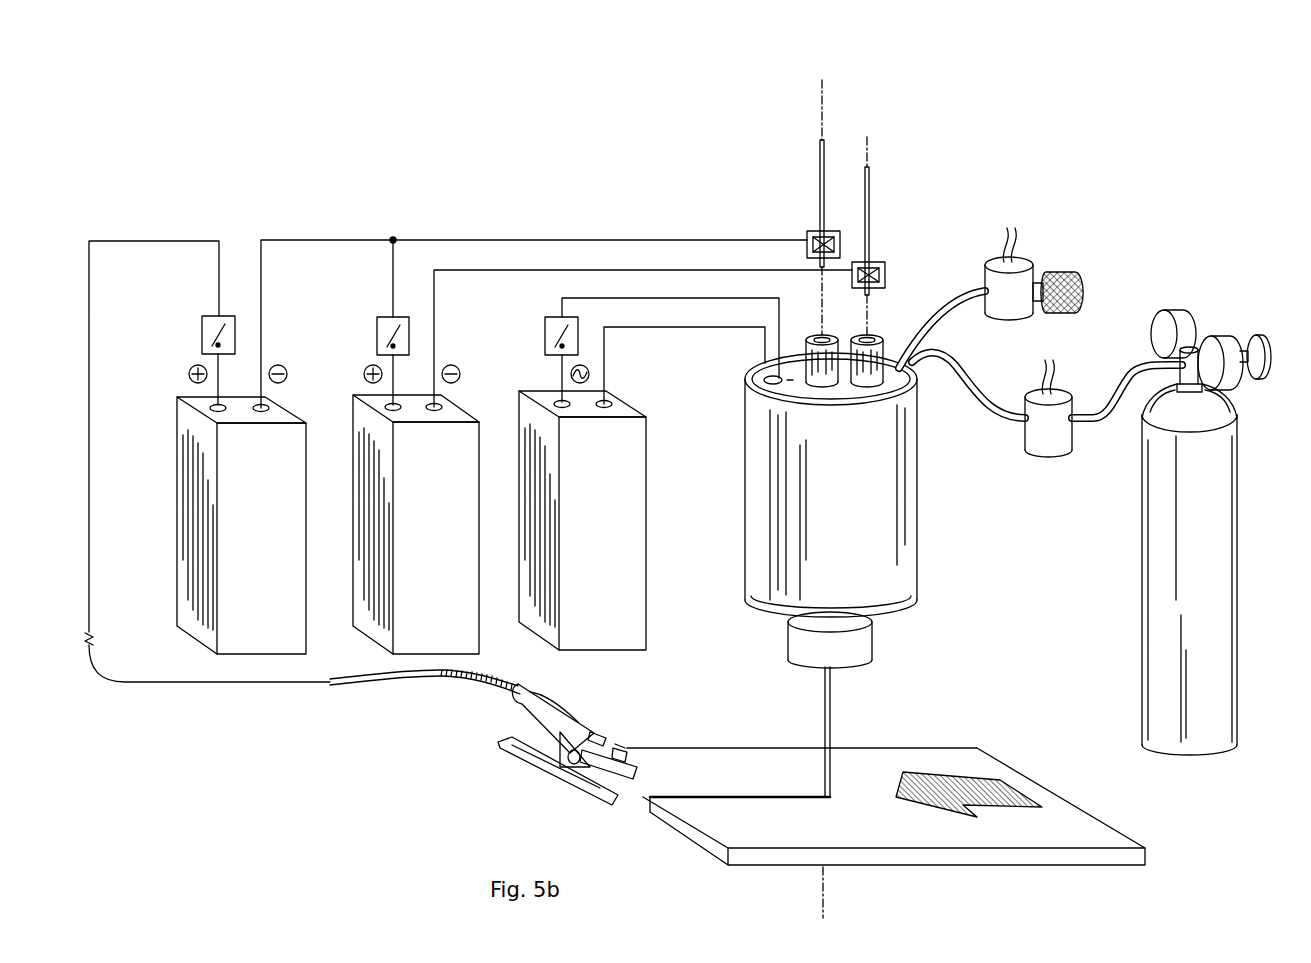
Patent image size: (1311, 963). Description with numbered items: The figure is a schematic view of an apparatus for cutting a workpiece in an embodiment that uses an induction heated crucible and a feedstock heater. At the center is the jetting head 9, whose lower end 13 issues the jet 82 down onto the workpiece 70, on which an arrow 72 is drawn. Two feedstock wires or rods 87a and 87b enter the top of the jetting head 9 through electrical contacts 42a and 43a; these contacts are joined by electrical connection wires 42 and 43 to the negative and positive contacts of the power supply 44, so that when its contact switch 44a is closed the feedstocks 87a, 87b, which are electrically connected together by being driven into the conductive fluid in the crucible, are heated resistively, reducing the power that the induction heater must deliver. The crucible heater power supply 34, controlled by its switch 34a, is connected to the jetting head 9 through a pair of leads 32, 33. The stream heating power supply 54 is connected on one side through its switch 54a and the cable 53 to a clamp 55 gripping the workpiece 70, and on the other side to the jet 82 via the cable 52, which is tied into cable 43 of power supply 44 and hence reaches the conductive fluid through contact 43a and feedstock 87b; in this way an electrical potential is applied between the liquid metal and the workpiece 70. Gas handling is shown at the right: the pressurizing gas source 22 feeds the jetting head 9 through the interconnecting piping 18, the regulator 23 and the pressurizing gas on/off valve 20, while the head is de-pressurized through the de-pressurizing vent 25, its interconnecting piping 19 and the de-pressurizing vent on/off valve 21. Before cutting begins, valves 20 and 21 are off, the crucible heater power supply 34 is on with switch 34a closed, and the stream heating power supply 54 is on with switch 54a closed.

The jetting head 9 is at (913, 497).
The electrode holder 13 is at (870, 641).
The pressurizing gas source interconnecting piping 18 is at (980, 409).
The de-pressurizing vent interconnecting piping 19 is at (945, 321).
The pressurizing gas source on/off valve 20 is at (1058, 395).
The de-pressurizing vent on/off valve 21 is at (1027, 261).
The pressurizing gas source 22 is at (1225, 487).
The pressurizing gas source regulator 23 is at (1188, 318).
The de-pressurizing vent 25 is at (1087, 293).
The lead 32 is at (648, 327).
The lead 33 is at (652, 298).
The crucible heater power supply 34 is at (582, 507).
The switch 34a is at (546, 323).
The electrical connection wire 42 is at (609, 270).
The electrical connection wire 43 is at (555, 239).
The electrical contact 42a is at (885, 277).
The electrical contact 43a is at (807, 245).
The power supply 44 is at (416, 509).
The contact switch 44a is at (378, 320).
The negative lead 52 is at (326, 240).
The positive lead 53 is at (150, 240).
The stream heating power supply 54 is at (241, 509).
The switch 54a is at (203, 320).
The clamp 55 is at (604, 733).
The workpiece 70 is at (950, 748).
The direction of movement arrow 72 is at (1002, 808).
The jet 82 is at (831, 702).
The feedstock wire 87a is at (869, 185).
The feedstock wire 87b is at (825, 155).